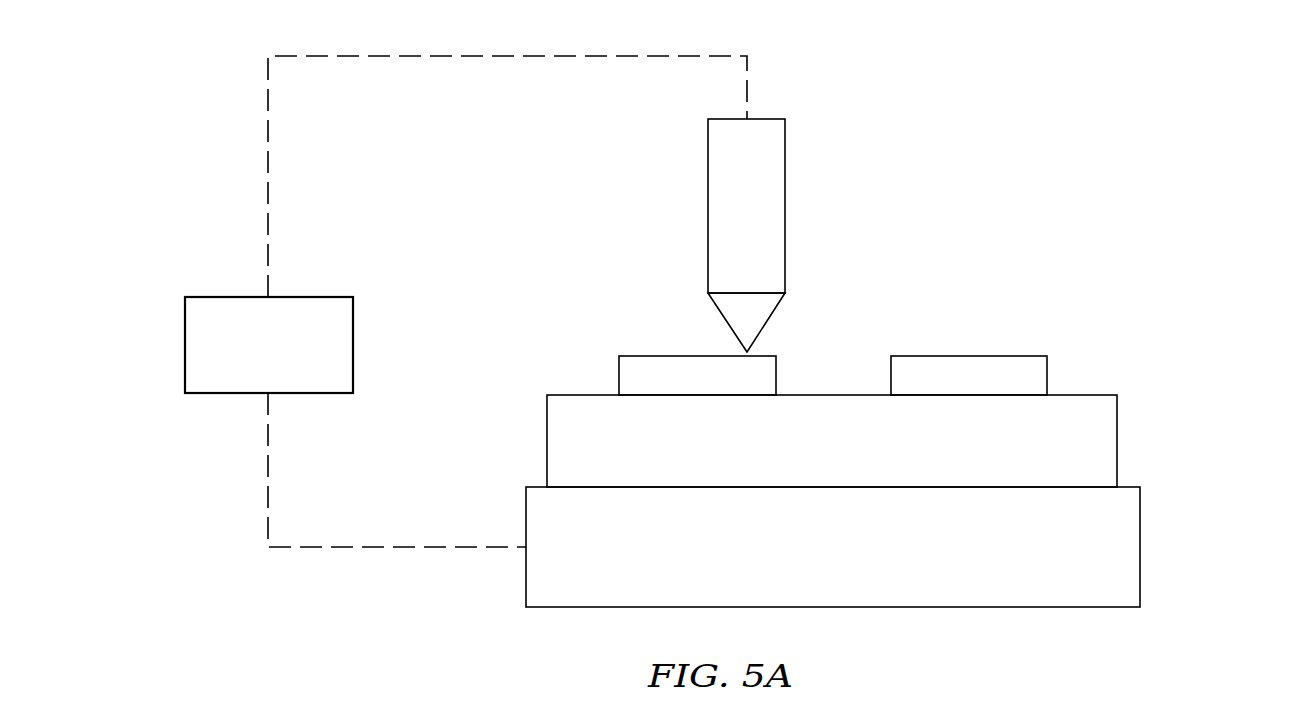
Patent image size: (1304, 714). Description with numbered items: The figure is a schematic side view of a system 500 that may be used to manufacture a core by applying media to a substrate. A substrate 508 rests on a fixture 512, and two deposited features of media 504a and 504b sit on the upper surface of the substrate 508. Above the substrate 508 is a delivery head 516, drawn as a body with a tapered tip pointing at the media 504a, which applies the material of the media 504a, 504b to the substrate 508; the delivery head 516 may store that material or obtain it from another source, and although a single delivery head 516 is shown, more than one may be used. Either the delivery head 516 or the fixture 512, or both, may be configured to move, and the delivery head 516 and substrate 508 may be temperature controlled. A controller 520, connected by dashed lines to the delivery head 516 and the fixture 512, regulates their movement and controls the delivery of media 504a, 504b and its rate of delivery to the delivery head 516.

The system 500 is at (1067, 185).
The media 504a is at (642, 355).
The media 504b is at (995, 355).
The substrate 508 is at (1117, 430).
The fixture 512 is at (1140, 545).
The delivery head 516 is at (767, 322).
The controller 520 is at (246, 378).